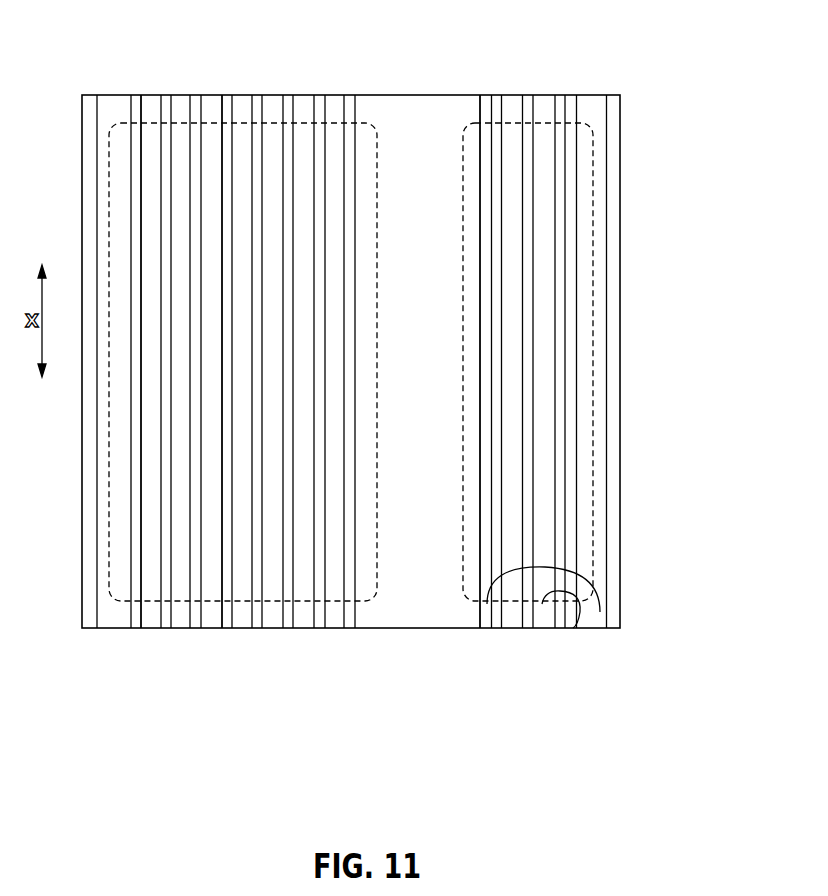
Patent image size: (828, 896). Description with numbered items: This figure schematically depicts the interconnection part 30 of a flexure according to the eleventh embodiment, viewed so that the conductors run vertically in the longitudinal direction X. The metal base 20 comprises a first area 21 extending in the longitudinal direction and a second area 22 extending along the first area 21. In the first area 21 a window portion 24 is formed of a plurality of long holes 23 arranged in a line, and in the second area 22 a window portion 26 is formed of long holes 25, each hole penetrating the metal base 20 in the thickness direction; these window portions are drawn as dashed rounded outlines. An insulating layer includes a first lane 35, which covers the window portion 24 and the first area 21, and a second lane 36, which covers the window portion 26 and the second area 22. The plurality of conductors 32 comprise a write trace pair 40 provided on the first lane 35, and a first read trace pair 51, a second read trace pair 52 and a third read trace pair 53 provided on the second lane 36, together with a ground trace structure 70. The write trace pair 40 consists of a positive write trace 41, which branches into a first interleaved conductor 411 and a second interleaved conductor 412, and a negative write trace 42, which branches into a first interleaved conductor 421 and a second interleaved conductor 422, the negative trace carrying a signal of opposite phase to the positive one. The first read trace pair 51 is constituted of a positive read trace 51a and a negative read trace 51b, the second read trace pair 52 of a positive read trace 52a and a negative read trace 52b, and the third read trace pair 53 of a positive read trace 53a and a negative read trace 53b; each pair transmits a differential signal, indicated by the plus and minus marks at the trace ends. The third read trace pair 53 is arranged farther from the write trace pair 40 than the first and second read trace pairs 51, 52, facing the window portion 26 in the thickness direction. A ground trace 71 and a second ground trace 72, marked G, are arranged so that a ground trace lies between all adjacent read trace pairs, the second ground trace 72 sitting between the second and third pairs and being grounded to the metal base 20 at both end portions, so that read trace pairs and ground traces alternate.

The metal base 20 is at (622, 402).
The first area 21 is at (512, 193).
The second area 22 is at (182, 191).
The long holes 23 is at (593, 165).
The window portion 24 is at (530, 168).
The long holes 25 is at (109, 165).
The window portion 26 is at (152, 168).
The interconnection part 30 is at (576, 321).
The conductors 32 is at (364, 454).
The first lane 35 is at (543, 193).
The second lane 36 is at (213, 194).
The write trace pair 40 is at (528, 434).
The positive write trace 41 is at (517, 415).
The negative write trace 42 is at (577, 415).
The first read trace pair 51 is at (337, 434).
The positive read trace 51a is at (320, 628).
The negative read trace 51b is at (350, 628).
The second read trace pair 52 is at (240, 434).
The positive read trace 52a is at (257, 628).
The negative read trace 52b is at (227, 628).
The third read trace pair 53 is at (147, 434).
The positive read trace 53a is at (137, 628).
The negative read trace 53b is at (166, 628).
The ground trace structure 70 is at (288, 192).
The ground trace 71 is at (288, 628).
The second ground trace 72 is at (195, 628).
The first interleaved conductor 411 is at (510, 622).
The second interleaved conductor 412 is at (572, 626).
The first interleaved conductor 421 is at (573, 628).
The second interleaved conductor 422 is at (600, 612).